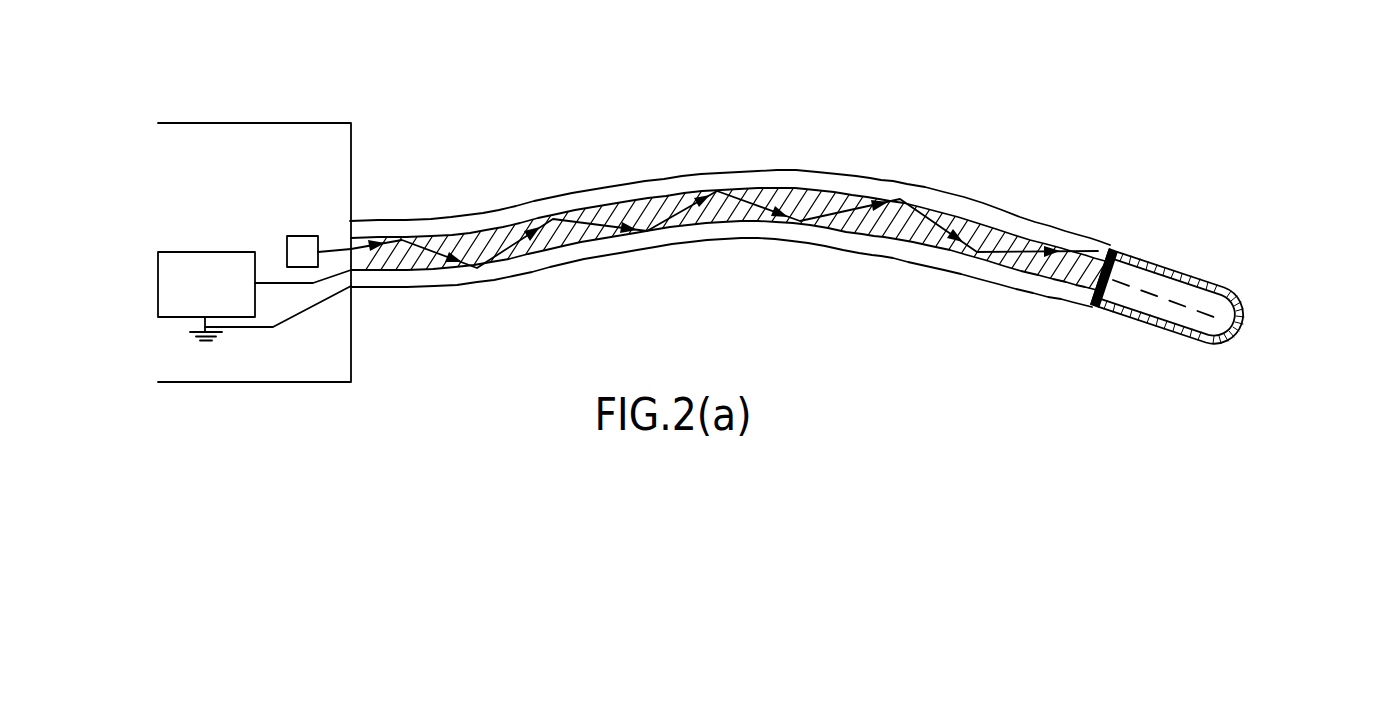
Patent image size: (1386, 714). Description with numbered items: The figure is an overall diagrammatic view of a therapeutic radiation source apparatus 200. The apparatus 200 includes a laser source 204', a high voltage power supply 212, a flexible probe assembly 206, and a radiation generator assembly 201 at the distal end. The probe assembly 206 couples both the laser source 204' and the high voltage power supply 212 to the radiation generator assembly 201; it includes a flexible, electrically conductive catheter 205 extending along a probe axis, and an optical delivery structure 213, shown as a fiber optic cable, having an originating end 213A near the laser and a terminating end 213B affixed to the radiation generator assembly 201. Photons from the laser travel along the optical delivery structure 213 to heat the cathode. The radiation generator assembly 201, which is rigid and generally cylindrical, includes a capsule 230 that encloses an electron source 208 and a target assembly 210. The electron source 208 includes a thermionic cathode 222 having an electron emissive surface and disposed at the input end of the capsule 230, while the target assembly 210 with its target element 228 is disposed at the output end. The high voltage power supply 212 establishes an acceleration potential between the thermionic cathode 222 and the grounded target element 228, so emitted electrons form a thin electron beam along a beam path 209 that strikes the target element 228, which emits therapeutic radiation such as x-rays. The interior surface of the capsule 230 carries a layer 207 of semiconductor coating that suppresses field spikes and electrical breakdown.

The therapeutic radiation source apparatus 200 is at (916, 89).
The radiation generator assembly 201 is at (1170, 348).
The laser source 204' is at (287, 228).
The catheter 205 is at (705, 239).
The probe assembly 206 is at (805, 287).
The layer of semiconductor coating 207 is at (1237, 284).
The electron source 208 is at (1090, 304).
The beam path 209 is at (1158, 294).
The target assembly 210 is at (1250, 282).
The high voltage power supply 212 is at (158, 283).
The optical delivery structure 213 is at (752, 215).
The originating end 213A is at (353, 278).
The terminating end 213B is at (1092, 302).
The thermionic cathode 222 is at (1108, 248).
The target element 228 is at (1240, 328).
The capsule 230 is at (1166, 331).